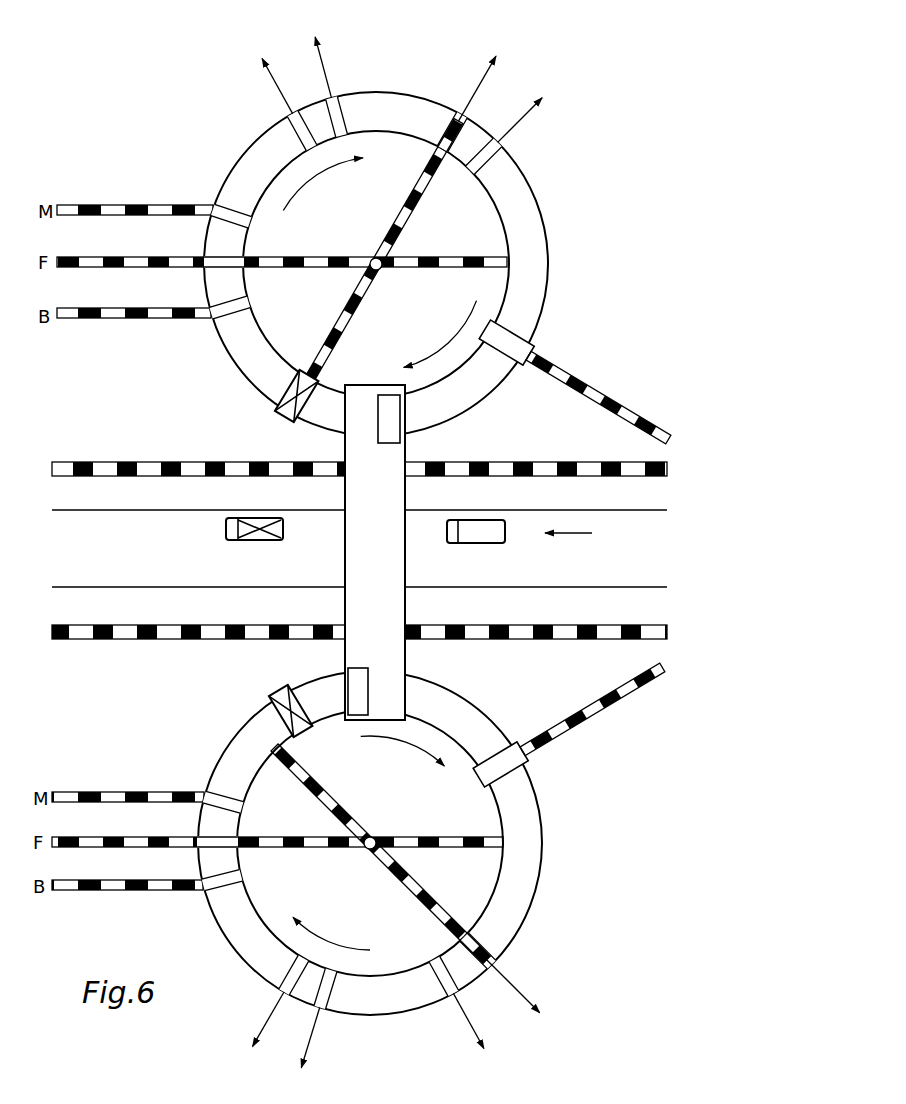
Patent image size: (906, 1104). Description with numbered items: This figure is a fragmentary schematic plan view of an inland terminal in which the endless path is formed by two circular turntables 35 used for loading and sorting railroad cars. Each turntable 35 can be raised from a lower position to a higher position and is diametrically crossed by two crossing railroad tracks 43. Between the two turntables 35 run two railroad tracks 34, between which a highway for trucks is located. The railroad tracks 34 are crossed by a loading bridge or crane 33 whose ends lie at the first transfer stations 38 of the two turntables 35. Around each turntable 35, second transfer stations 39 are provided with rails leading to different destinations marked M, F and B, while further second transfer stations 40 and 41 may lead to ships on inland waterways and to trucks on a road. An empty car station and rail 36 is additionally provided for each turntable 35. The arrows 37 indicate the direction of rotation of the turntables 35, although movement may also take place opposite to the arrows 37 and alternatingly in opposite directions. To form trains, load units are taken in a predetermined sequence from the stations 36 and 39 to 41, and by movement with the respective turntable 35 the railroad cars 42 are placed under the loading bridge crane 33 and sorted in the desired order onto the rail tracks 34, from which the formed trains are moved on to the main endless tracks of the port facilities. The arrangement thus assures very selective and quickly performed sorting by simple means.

The loading bridge or crane 33 is at (405, 570).
The railroad tracks 34 is at (122, 478).
The turntable 35 is at (483, 403).
The empty car station and rail 36 is at (533, 352).
The arrows indicating direction of rotation 37 is at (442, 345).
The first transfer station 38 is at (408, 440).
The second transfer station 39 is at (206, 220).
The further second transfer station 40 is at (323, 90).
The further second transfer station 41 is at (499, 132).
The railroad car 42 is at (280, 408).
The crossing railroad tracks 43 is at (440, 256).